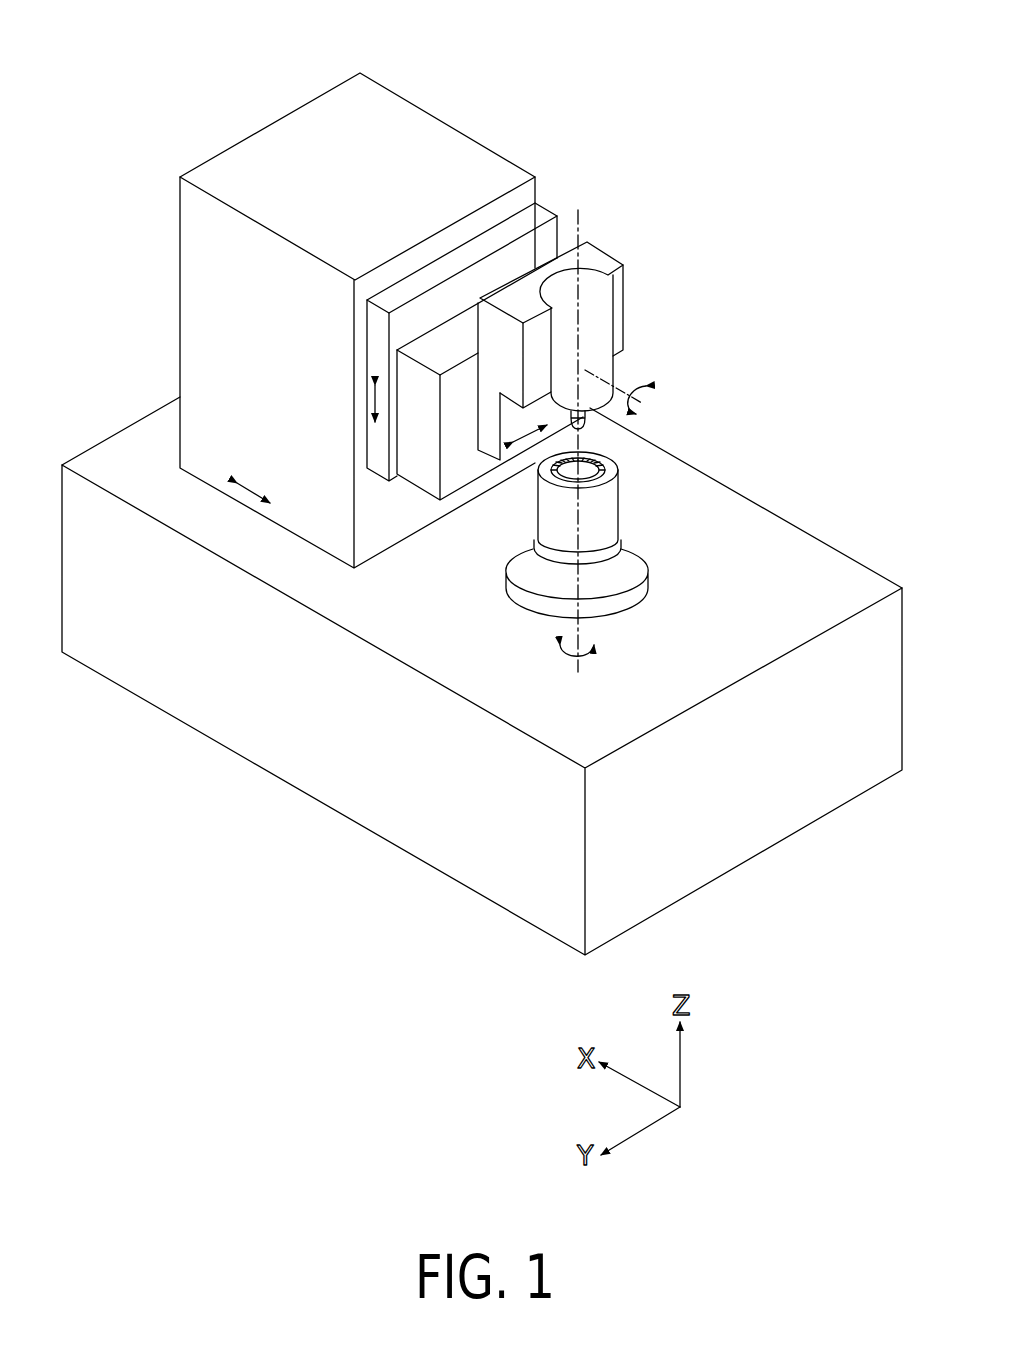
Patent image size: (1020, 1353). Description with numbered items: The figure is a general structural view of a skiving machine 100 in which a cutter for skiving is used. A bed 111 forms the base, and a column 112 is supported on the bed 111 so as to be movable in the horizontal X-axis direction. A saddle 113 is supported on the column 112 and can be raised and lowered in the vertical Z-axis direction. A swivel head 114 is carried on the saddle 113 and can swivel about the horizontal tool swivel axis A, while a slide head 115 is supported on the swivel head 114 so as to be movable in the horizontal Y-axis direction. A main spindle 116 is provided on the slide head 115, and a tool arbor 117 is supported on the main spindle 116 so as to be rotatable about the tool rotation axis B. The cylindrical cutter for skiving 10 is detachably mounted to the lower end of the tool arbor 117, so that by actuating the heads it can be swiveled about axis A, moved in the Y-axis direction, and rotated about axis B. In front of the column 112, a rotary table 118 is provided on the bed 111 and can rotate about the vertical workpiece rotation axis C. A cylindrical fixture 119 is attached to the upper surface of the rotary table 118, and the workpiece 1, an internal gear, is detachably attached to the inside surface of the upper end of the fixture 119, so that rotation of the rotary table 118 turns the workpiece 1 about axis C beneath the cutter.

The machine tool 100 is at (732, 105).
The bed 111 is at (98, 458).
The column 112 is at (178, 248).
The saddle 113 is at (376, 449).
The swivel head 114 is at (417, 470).
The slide head 115 is at (487, 438).
The main spindle 116 is at (608, 327).
The tool arbor 117 is at (565, 418).
The cutter for skiving 10 is at (588, 443).
The rotary table 118 is at (542, 585).
The fixture 119 is at (605, 518).
The workpiece 1 is at (572, 464).